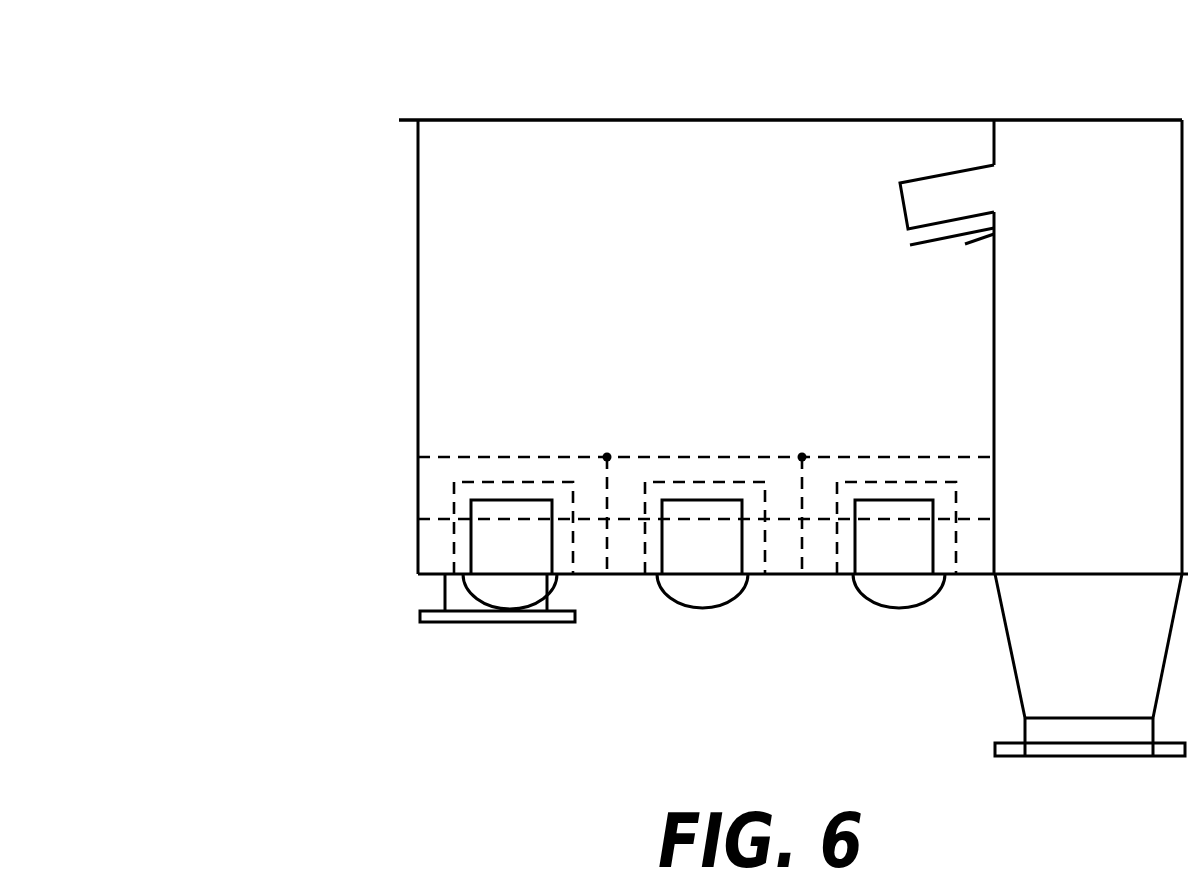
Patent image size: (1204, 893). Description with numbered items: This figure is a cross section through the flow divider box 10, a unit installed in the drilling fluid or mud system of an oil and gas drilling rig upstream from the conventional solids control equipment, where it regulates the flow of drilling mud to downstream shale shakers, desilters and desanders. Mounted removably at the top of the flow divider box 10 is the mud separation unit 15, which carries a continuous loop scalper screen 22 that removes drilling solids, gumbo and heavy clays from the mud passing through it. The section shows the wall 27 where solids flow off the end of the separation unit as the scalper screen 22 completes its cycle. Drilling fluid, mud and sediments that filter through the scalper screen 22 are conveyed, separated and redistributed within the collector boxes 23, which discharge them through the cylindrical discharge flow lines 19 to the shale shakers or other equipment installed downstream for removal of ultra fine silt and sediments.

The flow divider box 10 is at (418, 270).
The wall 27 is at (617, 163).
The mud separation unit 15 is at (976, 296).
The scalper screen 22 is at (923, 120).
The cylindrical discharge flow line 19 is at (680, 608).
The collector box 23 is at (863, 605).